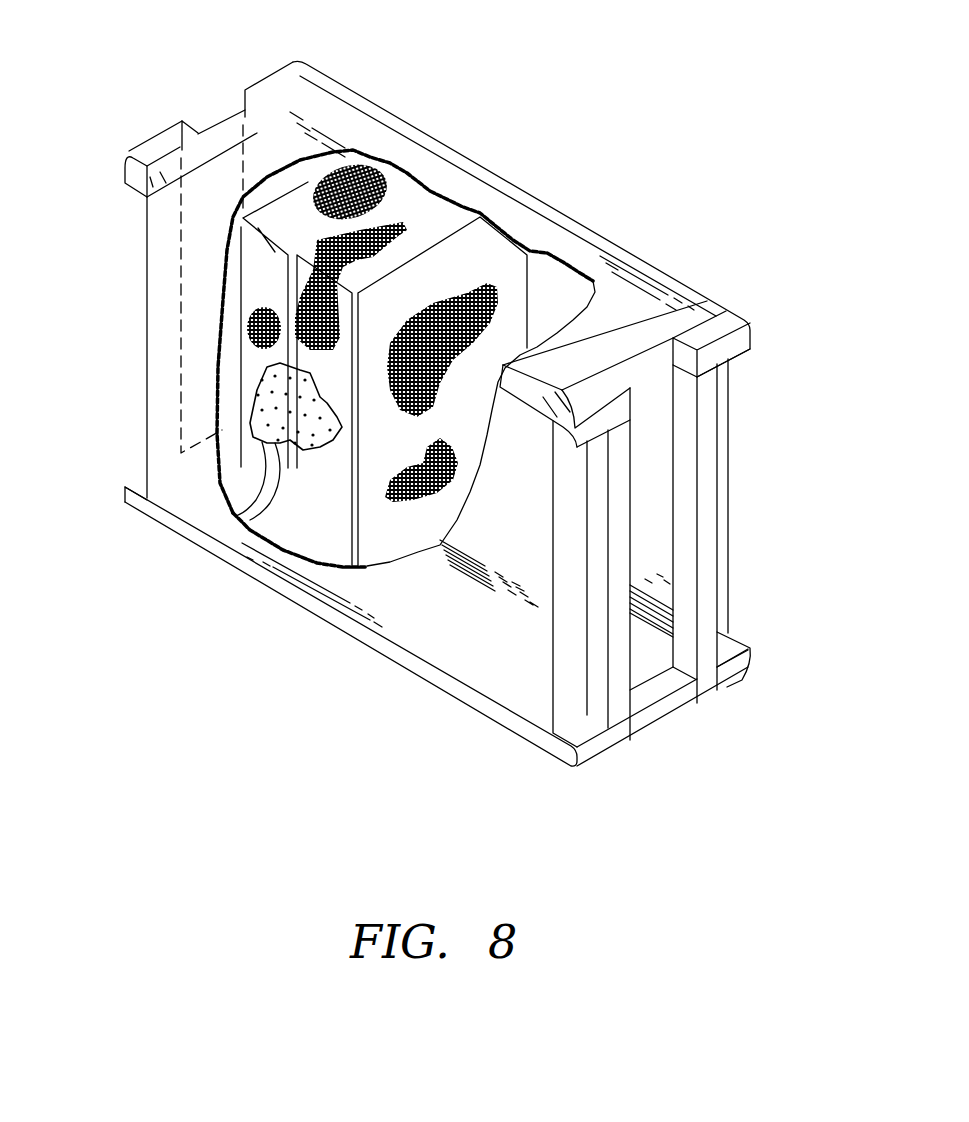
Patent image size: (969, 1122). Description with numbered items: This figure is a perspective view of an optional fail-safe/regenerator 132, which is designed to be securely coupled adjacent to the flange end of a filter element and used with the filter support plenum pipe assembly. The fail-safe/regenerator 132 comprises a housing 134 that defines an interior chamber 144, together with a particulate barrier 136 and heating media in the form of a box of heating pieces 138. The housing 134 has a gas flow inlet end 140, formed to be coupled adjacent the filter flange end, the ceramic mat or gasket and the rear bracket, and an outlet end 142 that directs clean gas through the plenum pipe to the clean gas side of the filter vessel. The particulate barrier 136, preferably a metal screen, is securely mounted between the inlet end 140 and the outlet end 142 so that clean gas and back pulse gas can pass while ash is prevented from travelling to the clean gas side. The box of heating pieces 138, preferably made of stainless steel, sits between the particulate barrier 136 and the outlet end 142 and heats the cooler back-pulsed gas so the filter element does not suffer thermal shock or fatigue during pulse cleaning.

The fail-safe/regenerator 132 is at (788, 257).
The housing 134 is at (418, 604).
The particulate barrier 136 is at (479, 282).
The box of heating pieces 138 is at (248, 512).
The gas flow inlet end 140 is at (653, 490).
The outlet end 142 is at (207, 272).
The interior chamber 144 is at (555, 283).